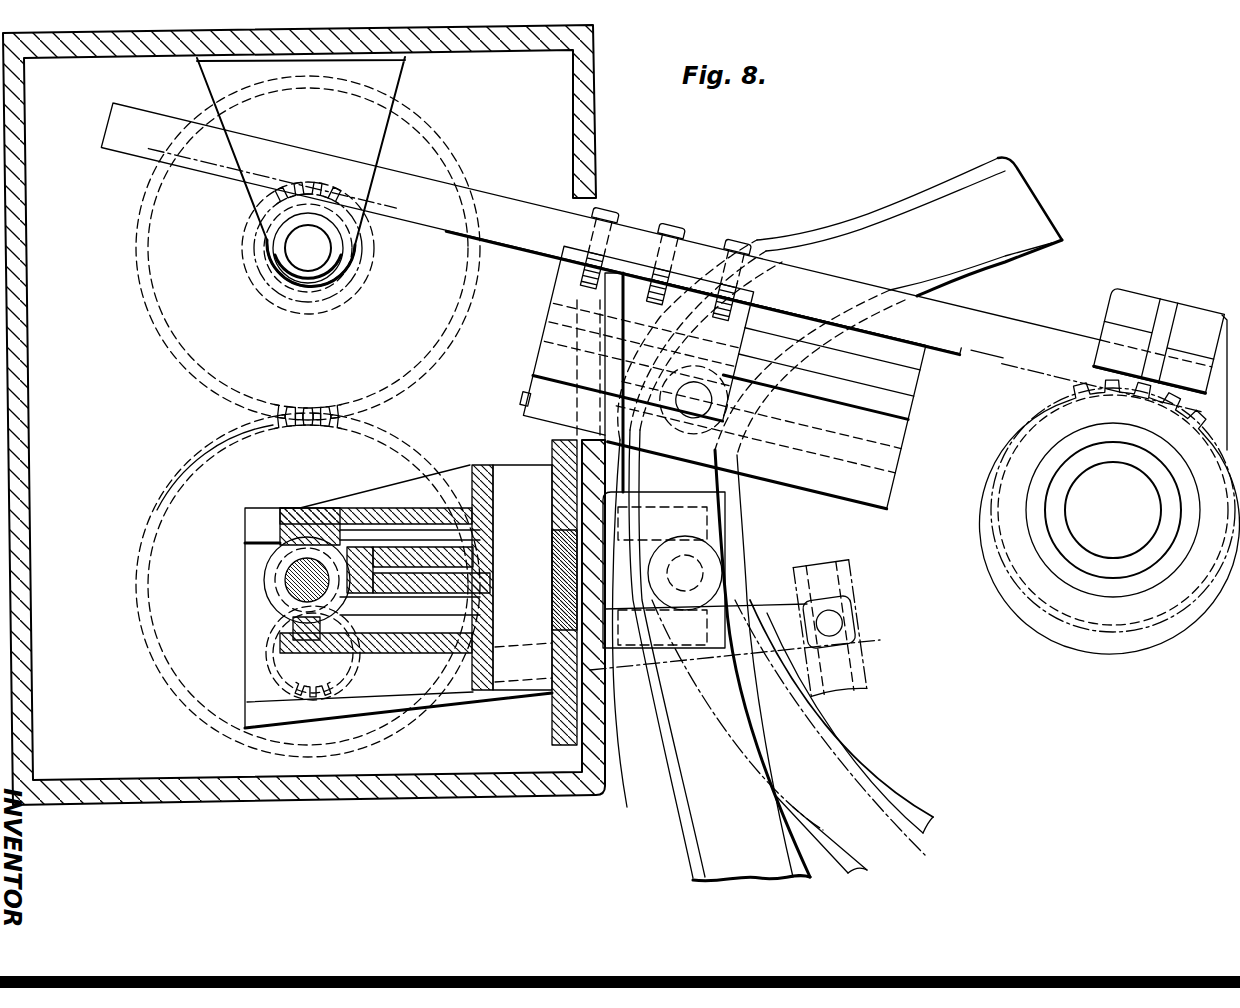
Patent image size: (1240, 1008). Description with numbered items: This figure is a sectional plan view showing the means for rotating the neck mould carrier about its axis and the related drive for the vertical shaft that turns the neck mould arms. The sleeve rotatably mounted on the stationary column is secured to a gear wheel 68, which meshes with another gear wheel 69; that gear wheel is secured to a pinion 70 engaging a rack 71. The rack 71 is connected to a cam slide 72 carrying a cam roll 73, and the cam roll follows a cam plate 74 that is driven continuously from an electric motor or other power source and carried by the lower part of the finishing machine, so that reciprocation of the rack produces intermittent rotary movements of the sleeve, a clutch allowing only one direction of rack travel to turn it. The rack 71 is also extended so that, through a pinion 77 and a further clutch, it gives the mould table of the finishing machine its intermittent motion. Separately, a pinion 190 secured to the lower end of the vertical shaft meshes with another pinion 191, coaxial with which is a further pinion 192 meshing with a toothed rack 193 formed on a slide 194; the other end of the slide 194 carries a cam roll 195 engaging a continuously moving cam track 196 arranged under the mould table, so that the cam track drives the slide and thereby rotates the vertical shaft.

The gear wheel 68 is at (158, 503).
The gear wheel 69 is at (147, 320).
The pinion 70 is at (353, 293).
The rack 71 is at (116, 146).
The cam slide 72 is at (550, 352).
The cam roll 73 is at (540, 400).
The cam plate 74 is at (897, 200).
The pinion 77 is at (983, 533).
The pinion 190 is at (270, 563).
The pinion 191 is at (283, 632).
The pinion 192 is at (285, 668).
The toothed rack 193 is at (430, 675).
The slide 194 is at (676, 539).
The cam roll 195 is at (855, 620).
The cam track 196 is at (857, 670).